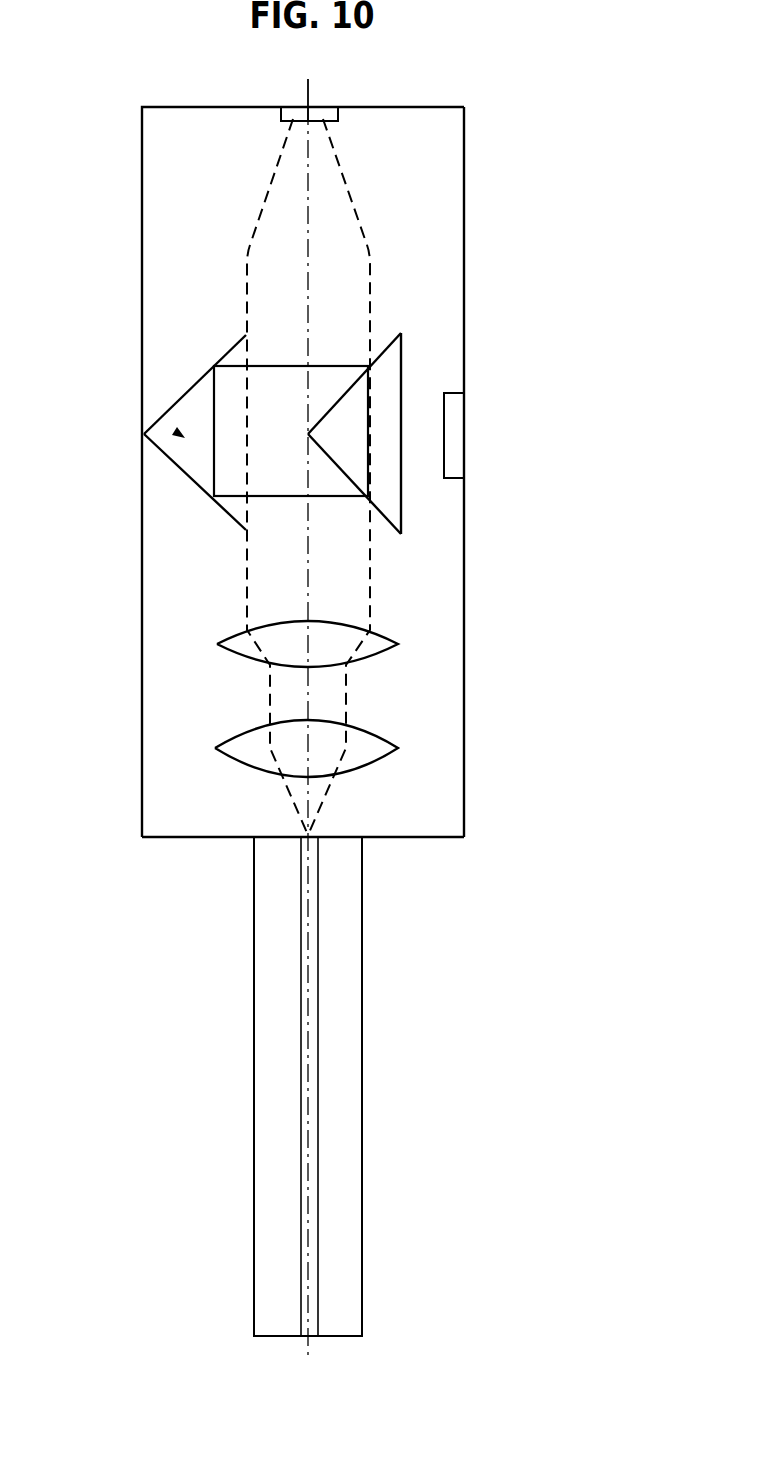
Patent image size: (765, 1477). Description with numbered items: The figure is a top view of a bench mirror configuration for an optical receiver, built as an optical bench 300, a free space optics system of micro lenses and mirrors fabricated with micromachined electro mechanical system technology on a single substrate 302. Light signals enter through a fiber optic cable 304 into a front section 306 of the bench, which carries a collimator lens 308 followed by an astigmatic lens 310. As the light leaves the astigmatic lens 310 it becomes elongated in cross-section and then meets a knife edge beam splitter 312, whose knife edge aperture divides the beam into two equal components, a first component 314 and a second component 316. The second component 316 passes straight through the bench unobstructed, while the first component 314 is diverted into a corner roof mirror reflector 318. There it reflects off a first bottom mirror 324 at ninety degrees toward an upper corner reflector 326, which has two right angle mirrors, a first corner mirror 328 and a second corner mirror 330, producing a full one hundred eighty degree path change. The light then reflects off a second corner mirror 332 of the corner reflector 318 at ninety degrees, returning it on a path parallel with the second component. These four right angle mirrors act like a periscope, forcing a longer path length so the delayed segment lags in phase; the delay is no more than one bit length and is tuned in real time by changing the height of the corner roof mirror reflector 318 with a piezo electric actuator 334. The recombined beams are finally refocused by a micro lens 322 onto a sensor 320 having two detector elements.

The optical bench 300 is at (119, 188).
The substrate 302 is at (438, 793).
The fiber optic cable 304 is at (352, 1010).
The front section 306 is at (413, 838).
The collimator lens 308 is at (375, 742).
The astigmatic lens 310 is at (378, 640).
The knife edge beam splitter 312 is at (453, 492).
The first component 314 is at (370, 583).
The second component 316 is at (247, 582).
The corner roof mirror reflector 318 is at (357, 485).
The sensor 320 is at (308, 95).
The micro lens 322 is at (327, 115).
The first bottom mirror 324 is at (388, 478).
The upper corner reflector 326 is at (176, 431).
The first corner mirror 328 is at (195, 482).
The second corner mirror 330 is at (188, 387).
The second corner mirror of the corner reflector 332 is at (357, 385).
The piezo electric actuator 334 is at (452, 408).